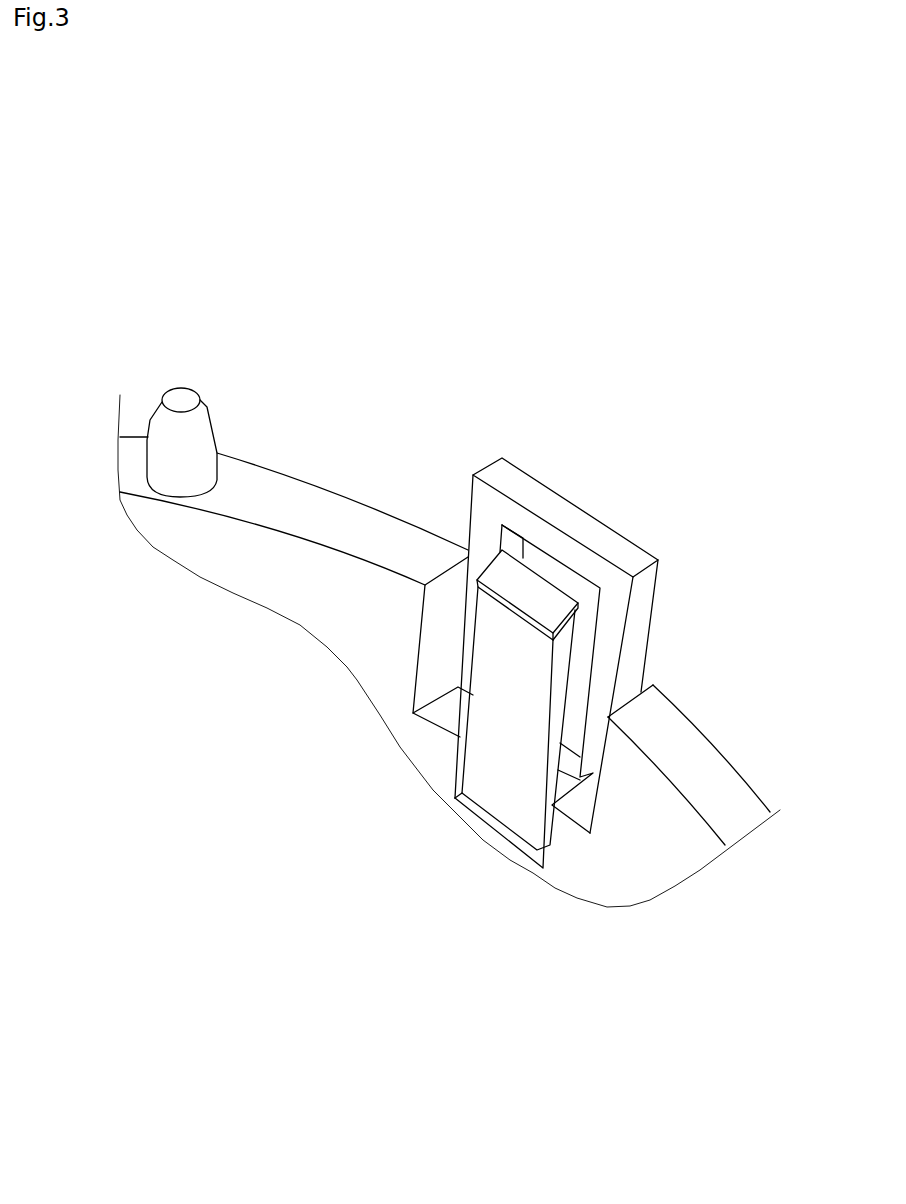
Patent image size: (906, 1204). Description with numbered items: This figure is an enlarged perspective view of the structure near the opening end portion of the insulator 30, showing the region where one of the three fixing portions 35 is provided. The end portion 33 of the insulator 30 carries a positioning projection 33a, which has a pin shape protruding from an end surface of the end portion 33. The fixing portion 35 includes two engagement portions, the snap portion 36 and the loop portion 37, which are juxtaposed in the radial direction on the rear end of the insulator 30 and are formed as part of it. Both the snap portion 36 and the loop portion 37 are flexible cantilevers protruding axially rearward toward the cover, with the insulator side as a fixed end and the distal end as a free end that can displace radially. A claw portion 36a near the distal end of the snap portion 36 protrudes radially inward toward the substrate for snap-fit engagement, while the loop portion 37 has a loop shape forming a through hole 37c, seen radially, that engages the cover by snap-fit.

The insulator 30 is at (158, 150).
The end portion 33 is at (344, 507).
The positioning projection 33a is at (185, 427).
The fixing portion 35 is at (702, 470).
The snap portion 36 is at (538, 683).
The claw portion 36a is at (525, 582).
The loop portion 37 is at (590, 603).
The through hole 37c is at (573, 602).